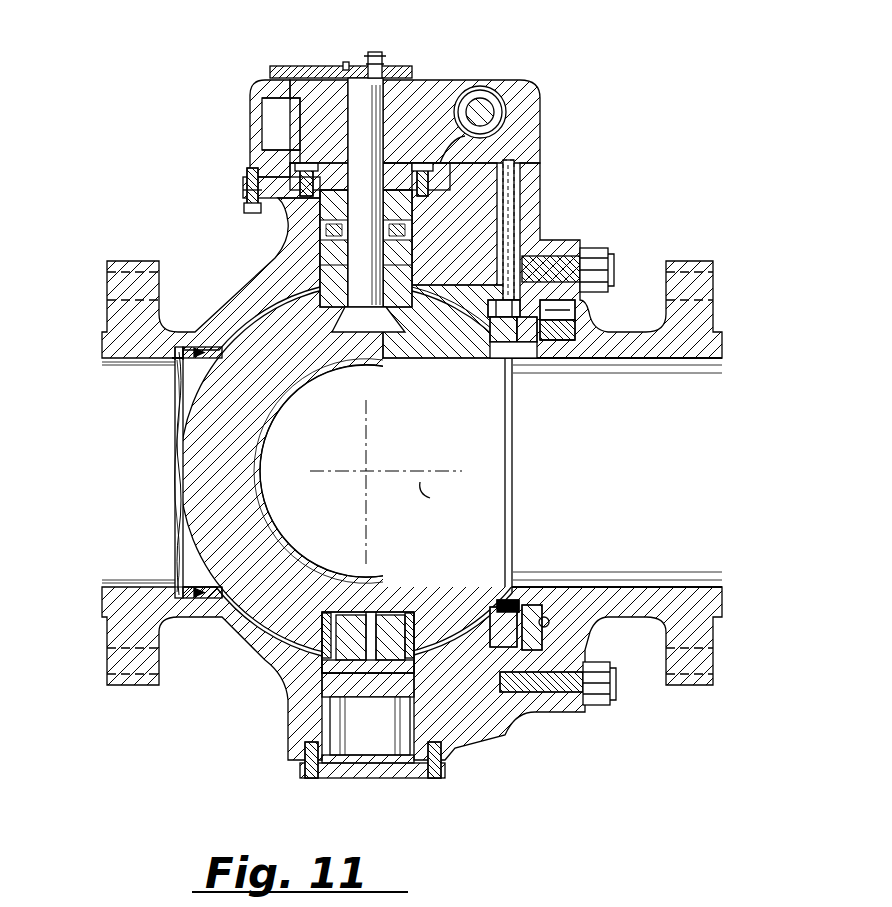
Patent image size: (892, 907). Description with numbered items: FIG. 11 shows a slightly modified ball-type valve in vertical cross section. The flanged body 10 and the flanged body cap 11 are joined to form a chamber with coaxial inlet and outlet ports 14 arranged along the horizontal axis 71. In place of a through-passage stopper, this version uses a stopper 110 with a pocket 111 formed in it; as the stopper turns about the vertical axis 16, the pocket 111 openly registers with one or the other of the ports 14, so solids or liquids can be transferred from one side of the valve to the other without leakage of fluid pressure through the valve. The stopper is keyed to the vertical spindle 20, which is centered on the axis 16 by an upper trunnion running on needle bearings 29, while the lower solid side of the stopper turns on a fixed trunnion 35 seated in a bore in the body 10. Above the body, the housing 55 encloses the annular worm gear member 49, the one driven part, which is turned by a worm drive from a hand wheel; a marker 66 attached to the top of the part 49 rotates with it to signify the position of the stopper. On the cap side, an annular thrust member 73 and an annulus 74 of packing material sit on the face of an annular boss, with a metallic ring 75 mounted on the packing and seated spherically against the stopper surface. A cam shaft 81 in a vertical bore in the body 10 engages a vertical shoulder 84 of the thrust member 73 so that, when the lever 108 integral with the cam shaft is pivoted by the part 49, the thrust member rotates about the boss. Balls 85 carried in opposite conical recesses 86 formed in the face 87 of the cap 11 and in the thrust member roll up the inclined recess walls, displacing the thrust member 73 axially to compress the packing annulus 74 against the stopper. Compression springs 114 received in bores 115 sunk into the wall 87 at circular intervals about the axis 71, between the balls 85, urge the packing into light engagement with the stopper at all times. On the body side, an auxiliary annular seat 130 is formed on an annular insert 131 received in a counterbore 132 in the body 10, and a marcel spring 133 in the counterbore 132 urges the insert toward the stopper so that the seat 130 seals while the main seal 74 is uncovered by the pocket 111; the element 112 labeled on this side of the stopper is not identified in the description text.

The flanged body 10 is at (107, 322).
The flanged body cap 11 is at (722, 312).
The inlet and outlet ports 14 is at (210, 590).
The vertical axis 16 is at (386, 437).
The vertical spindle 20 is at (368, 192).
The needle bearings 29 is at (430, 336).
The fixed trunnion 35 is at (372, 725).
The annular worm gear member (one driven part) 49 is at (448, 95).
The housing 55 is at (262, 102).
The marker 66 is at (292, 66).
The horizontal axis 71 is at (430, 498).
The annular thrust member 73 is at (530, 358).
The annulus of packing material 74 is at (504, 600).
The metallic ring 75 is at (504, 630).
The cam shaft 81 is at (545, 222).
The vertical shoulder 84 is at (496, 308).
The balls 85 is at (568, 612).
The conical recesses 86 is at (546, 616).
The face of body cap 87 is at (558, 306).
The lever 108 is at (530, 176).
The stopper 110 is at (200, 505).
The pocket 111 is at (284, 540).
The seat ring 112 is at (206, 420).
The compression springs 114 is at (570, 345).
The bores 115 is at (568, 326).
The auxiliary annular seat 130 is at (206, 350).
The annular insert 131 is at (184, 348).
The counterbore 132 is at (180, 368).
The marcel spring 133 is at (176, 445).